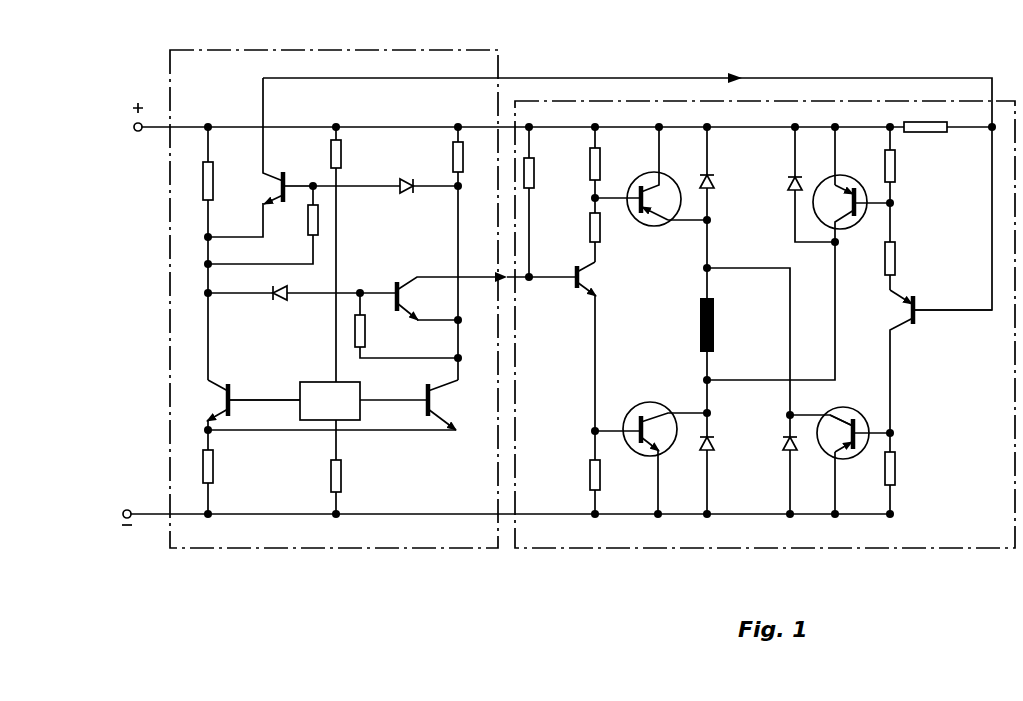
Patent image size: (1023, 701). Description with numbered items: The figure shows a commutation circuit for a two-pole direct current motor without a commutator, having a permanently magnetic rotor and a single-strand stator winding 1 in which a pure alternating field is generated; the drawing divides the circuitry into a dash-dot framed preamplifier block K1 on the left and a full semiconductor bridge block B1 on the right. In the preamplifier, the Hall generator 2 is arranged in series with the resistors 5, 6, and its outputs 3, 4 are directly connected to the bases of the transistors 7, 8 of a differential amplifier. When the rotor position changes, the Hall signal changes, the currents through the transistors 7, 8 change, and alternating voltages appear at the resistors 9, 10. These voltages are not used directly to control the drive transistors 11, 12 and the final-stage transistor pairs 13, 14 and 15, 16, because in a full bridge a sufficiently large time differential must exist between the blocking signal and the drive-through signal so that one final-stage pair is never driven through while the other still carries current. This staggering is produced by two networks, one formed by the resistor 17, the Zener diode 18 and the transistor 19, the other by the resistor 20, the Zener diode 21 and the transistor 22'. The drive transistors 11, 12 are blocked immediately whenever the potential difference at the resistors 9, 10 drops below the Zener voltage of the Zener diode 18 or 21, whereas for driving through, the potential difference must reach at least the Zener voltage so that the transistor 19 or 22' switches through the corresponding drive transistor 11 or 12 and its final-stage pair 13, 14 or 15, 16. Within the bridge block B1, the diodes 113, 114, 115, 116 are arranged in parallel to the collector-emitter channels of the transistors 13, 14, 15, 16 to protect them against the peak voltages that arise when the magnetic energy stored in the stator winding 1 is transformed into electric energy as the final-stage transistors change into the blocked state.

The stator winding 1 is at (716, 325).
The Hall generator 2 is at (330, 390).
The Hall generator output 3 is at (273, 404).
The Hall generator output 4 is at (386, 404).
The resistor 5 is at (345, 254).
The resistor 6 is at (338, 476).
The transistor 7 is at (253, 402).
The transistor 8 is at (435, 403).
The resistor 9 is at (215, 182).
The resistor 10 is at (473, 156).
The drive transistor 11 is at (941, 360).
The drive transistor 12 is at (581, 347).
The final-stage transistor 13 is at (651, 176).
The final-stage transistor 14 is at (651, 447).
The final-stage transistor 15 is at (851, 184).
The final-stage transistor 16 is at (853, 452).
The resistor 17 is at (365, 333).
The Zener diode 18 is at (284, 310).
The transistor 19 is at (427, 290).
The resistor 20 is at (263, 225).
The Zener diode 21 is at (385, 173).
The transistor 22' is at (260, 157).
The diode 113 is at (726, 173).
The diode 114 is at (725, 475).
The diode 115 is at (799, 184).
The diode 116 is at (802, 464).
The control circuit block K1 is at (362, 50).
The output stage block B1 is at (765, 101).